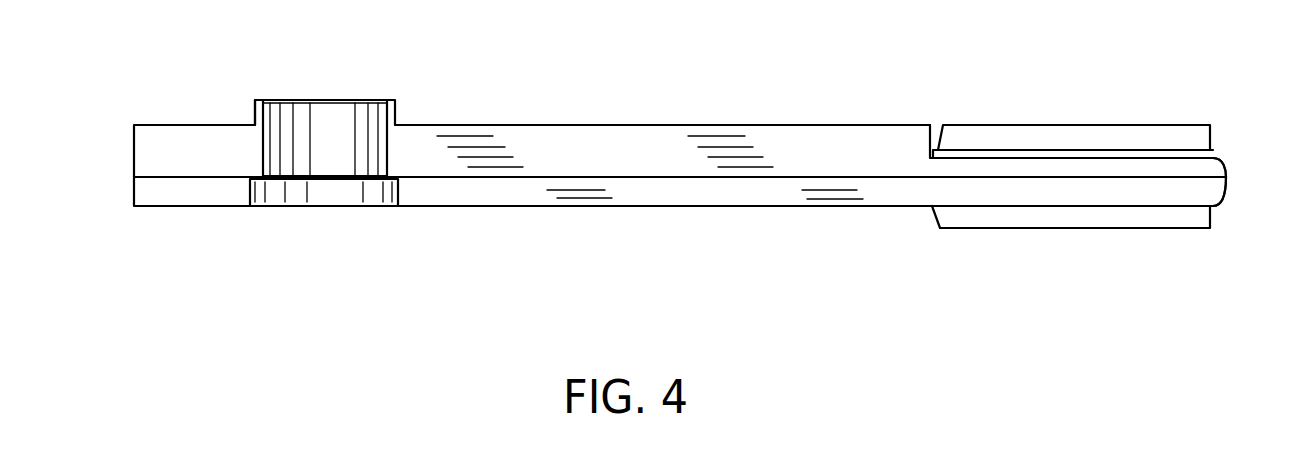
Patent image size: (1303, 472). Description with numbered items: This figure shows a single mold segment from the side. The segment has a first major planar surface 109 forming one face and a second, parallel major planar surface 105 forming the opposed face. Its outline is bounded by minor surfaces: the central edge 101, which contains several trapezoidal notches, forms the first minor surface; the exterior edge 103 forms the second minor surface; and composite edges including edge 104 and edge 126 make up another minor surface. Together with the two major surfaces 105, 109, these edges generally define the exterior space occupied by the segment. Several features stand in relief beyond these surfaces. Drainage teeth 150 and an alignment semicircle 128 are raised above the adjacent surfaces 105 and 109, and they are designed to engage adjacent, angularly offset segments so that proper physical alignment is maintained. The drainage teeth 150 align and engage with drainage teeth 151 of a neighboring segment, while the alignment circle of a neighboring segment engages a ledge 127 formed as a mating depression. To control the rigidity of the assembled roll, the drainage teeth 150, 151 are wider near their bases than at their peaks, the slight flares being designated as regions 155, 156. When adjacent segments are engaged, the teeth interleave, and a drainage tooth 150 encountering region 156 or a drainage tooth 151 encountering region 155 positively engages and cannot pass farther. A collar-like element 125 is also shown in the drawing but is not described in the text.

The central edge 101 is at (128, 165).
The exterior edge 103 is at (1220, 167).
The composite edge 104 is at (593, 147).
The second major planar surface 105 is at (737, 207).
The first major planar surface 109 is at (807, 123).
The proximal collar 125 is at (287, 99).
The composite edge 126 is at (538, 197).
The ledge 127 is at (340, 195).
The alignment semicircle 128 is at (254, 107).
The drainage teeth 150 is at (1077, 228).
The drainage teeth 151 is at (1022, 128).
The region 155 is at (1117, 208).
The region 156 is at (1127, 150).